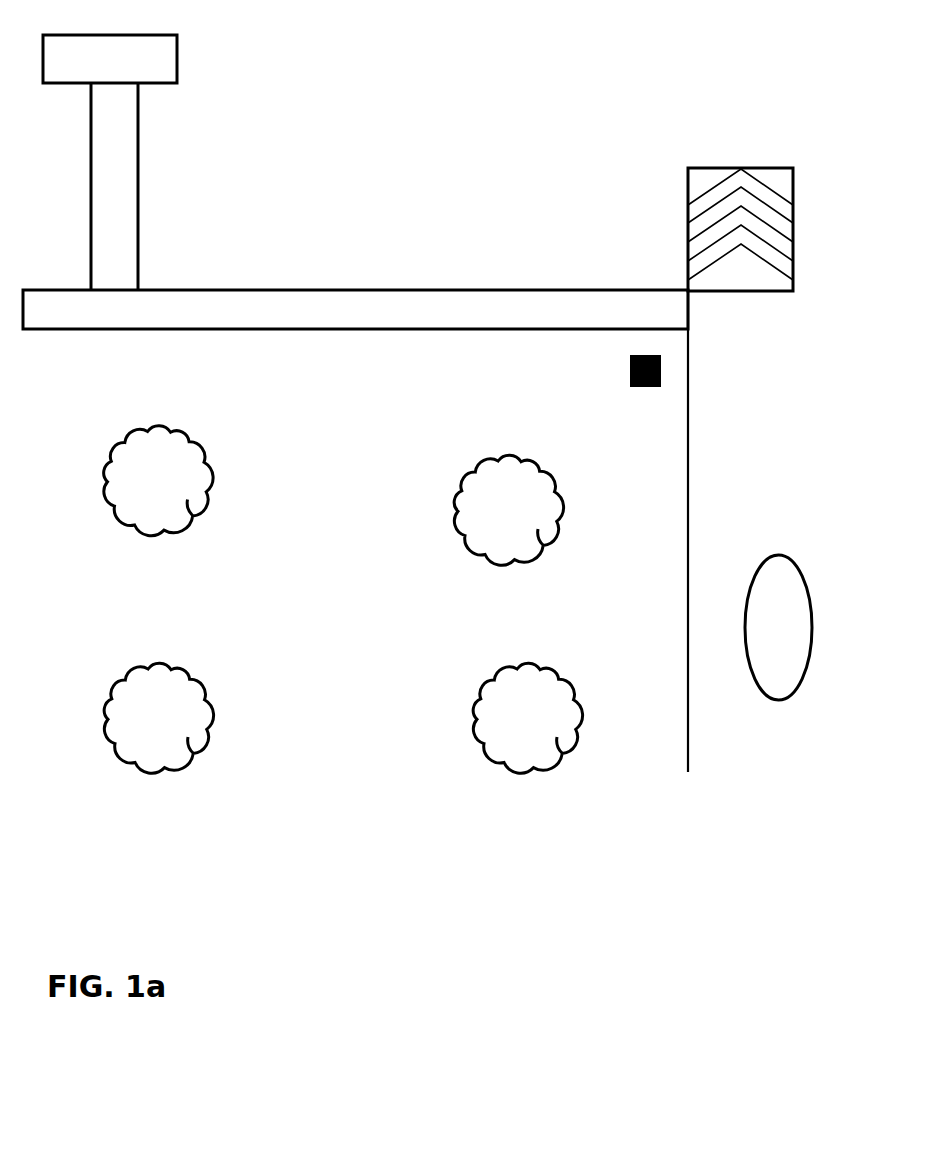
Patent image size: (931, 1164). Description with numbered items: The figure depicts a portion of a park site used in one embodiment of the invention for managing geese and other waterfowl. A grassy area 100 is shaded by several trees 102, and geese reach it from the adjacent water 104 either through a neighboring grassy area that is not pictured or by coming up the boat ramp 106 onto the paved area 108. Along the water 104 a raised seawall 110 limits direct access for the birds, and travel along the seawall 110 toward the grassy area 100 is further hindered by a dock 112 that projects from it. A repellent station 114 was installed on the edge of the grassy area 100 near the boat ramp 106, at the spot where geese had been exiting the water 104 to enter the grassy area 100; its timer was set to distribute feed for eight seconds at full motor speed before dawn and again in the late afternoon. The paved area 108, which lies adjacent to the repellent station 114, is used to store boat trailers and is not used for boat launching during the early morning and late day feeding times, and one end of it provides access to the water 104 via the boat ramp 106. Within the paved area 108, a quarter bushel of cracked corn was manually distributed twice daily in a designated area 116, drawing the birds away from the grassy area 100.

The grassy area 100 is at (351, 610).
The trees 102 is at (177, 481).
The water 104 is at (475, 145).
The boat ramp 106 is at (745, 217).
The paved area 108 is at (745, 531).
The raised seawall 110 is at (252, 310).
The dock 112 is at (127, 130).
The repellent station 114 is at (643, 355).
The area 116 is at (778, 627).